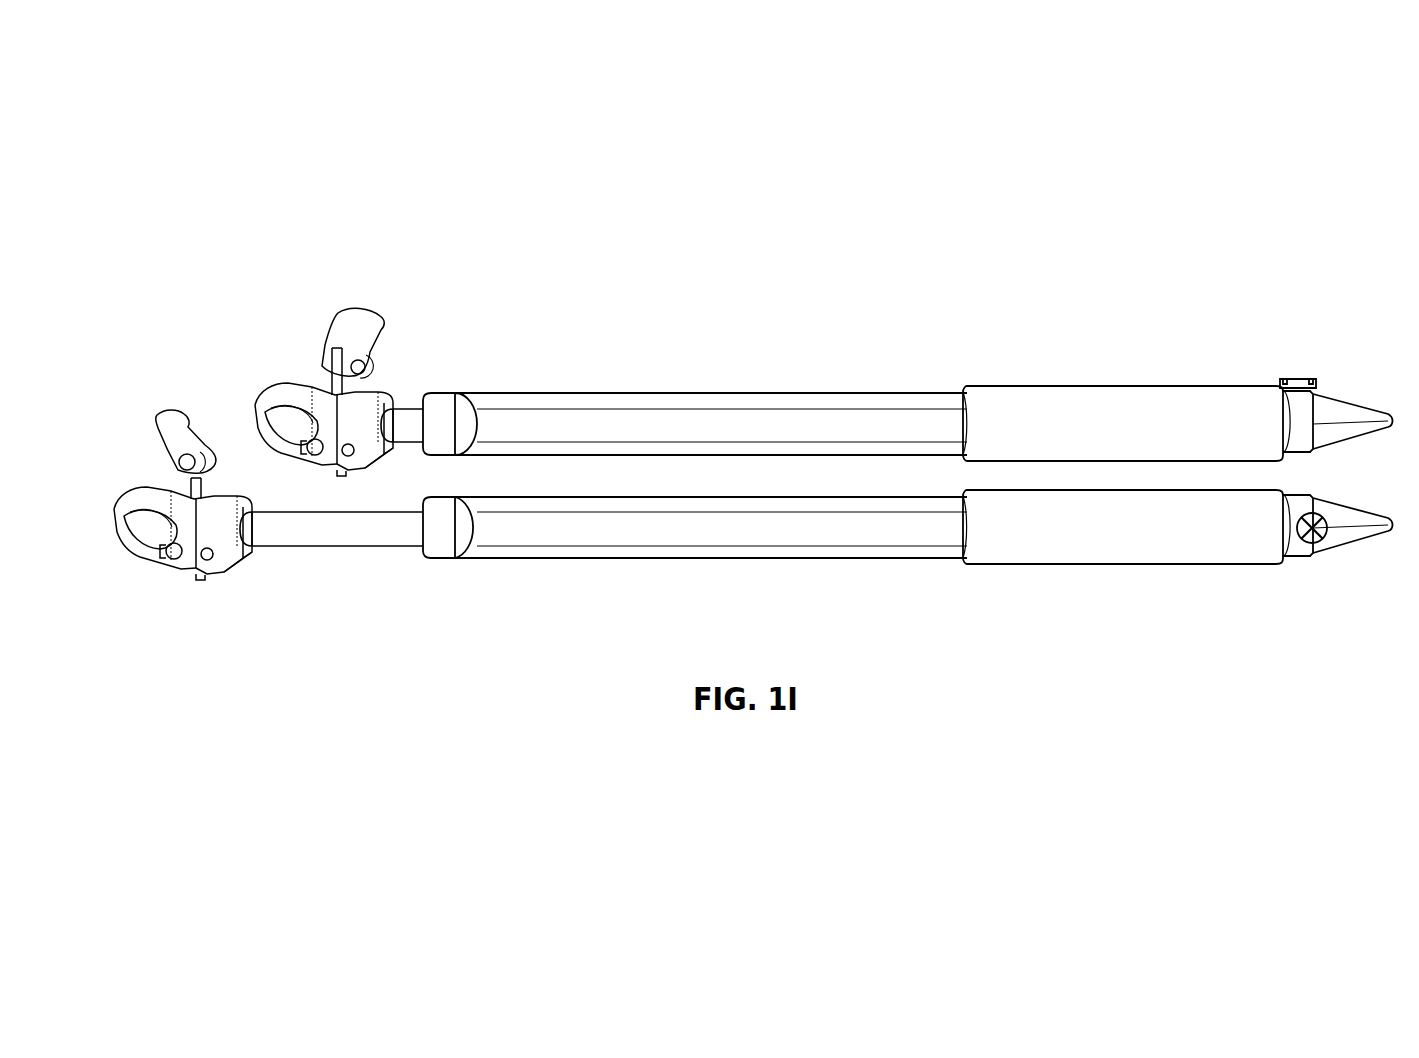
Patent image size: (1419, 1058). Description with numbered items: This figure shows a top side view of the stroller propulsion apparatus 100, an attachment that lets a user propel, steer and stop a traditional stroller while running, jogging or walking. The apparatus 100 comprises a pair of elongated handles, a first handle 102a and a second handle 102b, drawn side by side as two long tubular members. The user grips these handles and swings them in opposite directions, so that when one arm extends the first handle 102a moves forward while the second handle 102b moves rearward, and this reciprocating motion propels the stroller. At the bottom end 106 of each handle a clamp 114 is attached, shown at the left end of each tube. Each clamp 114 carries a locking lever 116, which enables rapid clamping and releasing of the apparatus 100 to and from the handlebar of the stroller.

The stroller propulsion apparatus 100 is at (212, 261).
The first handle 102a is at (870, 392).
The second handle 102b is at (777, 560).
The bottom end 106 is at (245, 503).
The clamp 114 is at (150, 482).
The locking lever 116 is at (172, 410).